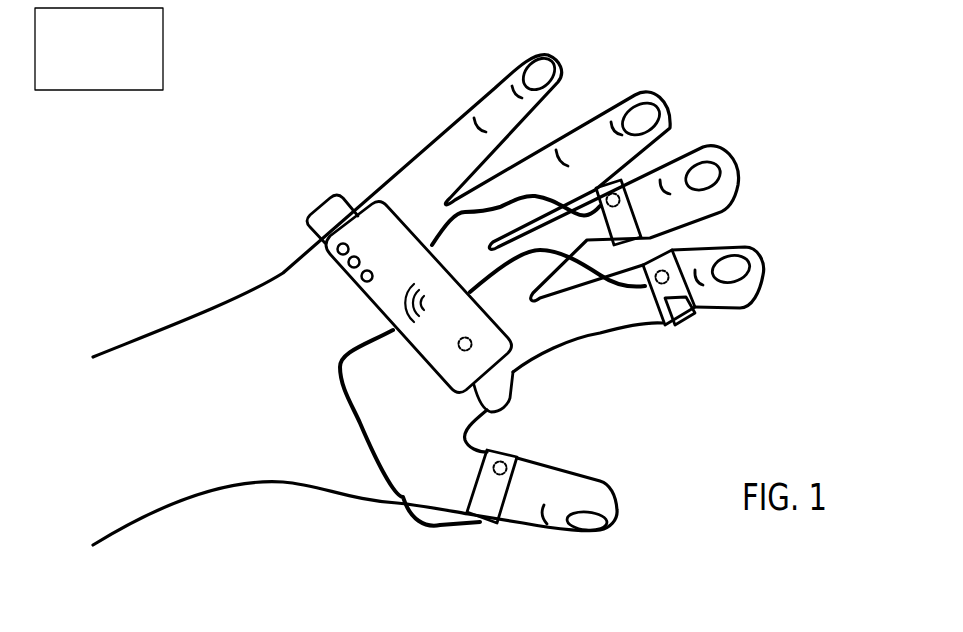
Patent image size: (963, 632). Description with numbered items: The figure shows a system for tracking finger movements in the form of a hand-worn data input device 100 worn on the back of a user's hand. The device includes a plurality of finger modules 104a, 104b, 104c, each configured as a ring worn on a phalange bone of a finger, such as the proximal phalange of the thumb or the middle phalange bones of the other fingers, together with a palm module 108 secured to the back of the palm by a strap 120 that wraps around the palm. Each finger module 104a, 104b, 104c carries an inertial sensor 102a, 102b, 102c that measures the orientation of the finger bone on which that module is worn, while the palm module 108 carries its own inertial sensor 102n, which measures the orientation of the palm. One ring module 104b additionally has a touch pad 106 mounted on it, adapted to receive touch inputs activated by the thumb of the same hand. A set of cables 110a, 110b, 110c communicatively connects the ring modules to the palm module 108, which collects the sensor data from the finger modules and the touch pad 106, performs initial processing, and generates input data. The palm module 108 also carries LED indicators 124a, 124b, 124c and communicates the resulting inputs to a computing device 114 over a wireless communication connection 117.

The hand-worn data input device 100 is at (191, 161).
The computing device 114 is at (99, 49).
The strap 120 is at (333, 203).
The palm module 108 is at (337, 271).
The LED indicator 124a is at (343, 243).
The LED indicator 124b is at (355, 256).
The LED indicator 124c is at (368, 270).
The wireless communication connection 117 is at (404, 300).
The inertial sensor 102n is at (470, 349).
The cable 110a is at (360, 432).
The cable 110b is at (565, 200).
The cable 110c is at (628, 300).
The finger module 104a is at (473, 525).
The finger module 104b is at (676, 258).
The finger module 104c is at (650, 227).
The inertial sensor 102a is at (520, 468).
The inertial sensor 102b is at (670, 278).
The inertial sensor 102c is at (630, 188).
The touch pad 106 is at (680, 317).